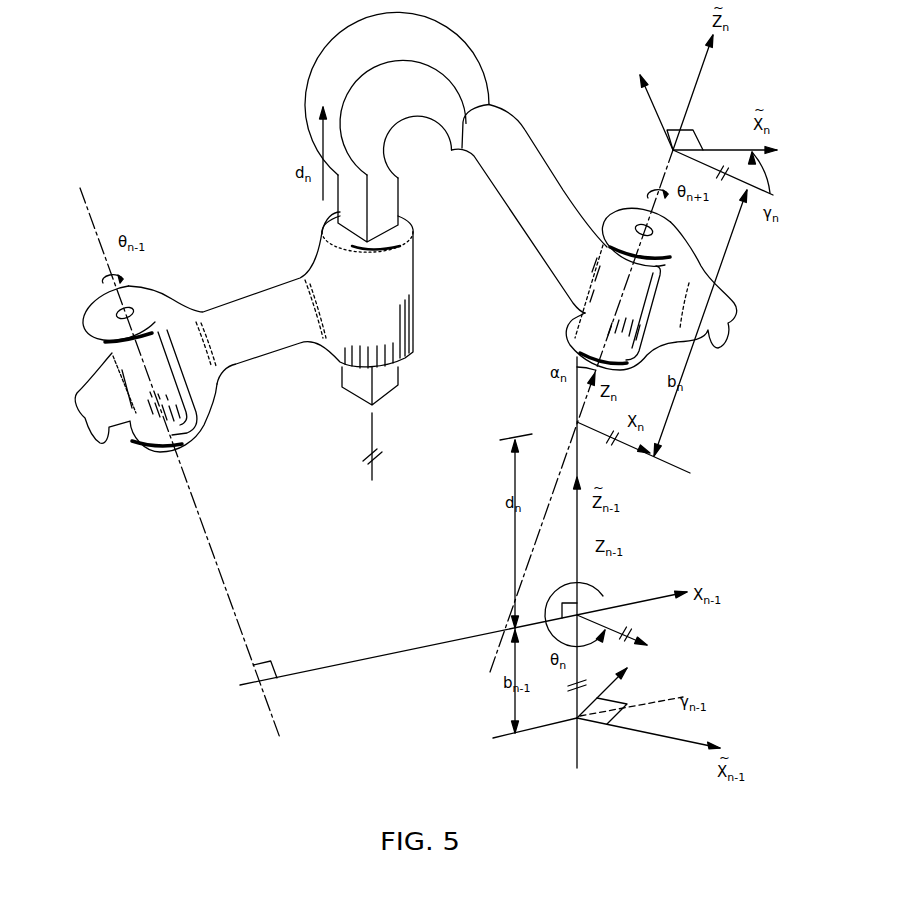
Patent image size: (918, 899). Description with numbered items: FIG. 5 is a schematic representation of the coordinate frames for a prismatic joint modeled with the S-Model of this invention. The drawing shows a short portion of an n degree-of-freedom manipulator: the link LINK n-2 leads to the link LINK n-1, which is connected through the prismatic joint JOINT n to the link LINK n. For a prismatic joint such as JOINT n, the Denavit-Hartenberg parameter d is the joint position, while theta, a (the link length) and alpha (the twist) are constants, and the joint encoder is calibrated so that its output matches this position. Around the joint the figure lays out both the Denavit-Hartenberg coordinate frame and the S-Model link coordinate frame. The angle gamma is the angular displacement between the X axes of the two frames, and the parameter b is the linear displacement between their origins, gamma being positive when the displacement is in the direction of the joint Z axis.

The manipulator link LINK n-2 is at (146, 404).
The manipulator link LINK n-1 is at (279, 303).
The prismatic joint JOINT n is at (397, 127).
The manipulator link LINK n is at (541, 167).